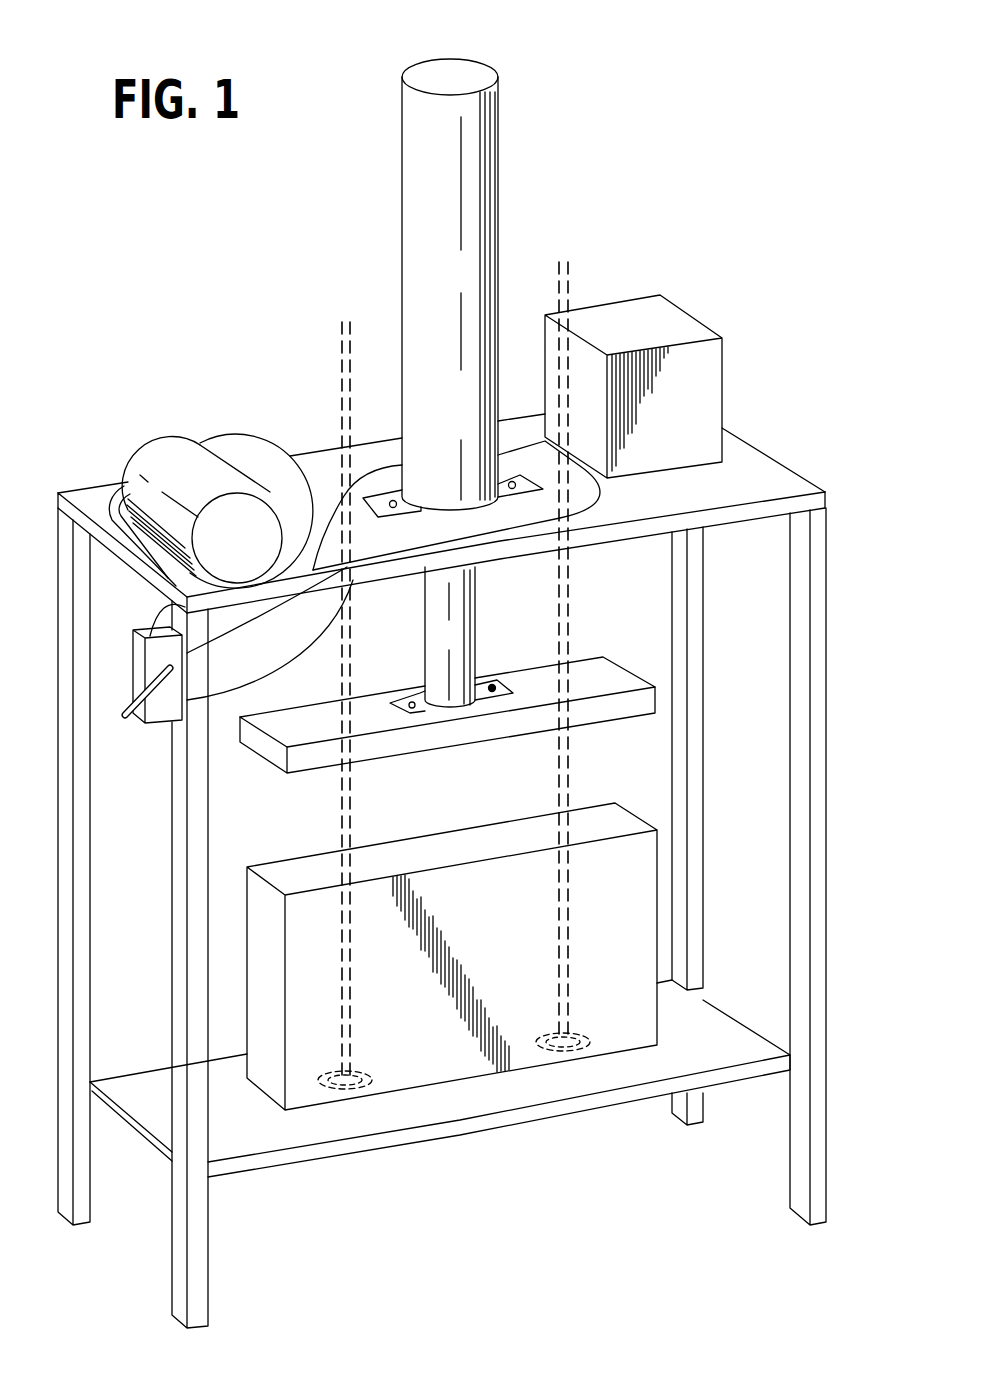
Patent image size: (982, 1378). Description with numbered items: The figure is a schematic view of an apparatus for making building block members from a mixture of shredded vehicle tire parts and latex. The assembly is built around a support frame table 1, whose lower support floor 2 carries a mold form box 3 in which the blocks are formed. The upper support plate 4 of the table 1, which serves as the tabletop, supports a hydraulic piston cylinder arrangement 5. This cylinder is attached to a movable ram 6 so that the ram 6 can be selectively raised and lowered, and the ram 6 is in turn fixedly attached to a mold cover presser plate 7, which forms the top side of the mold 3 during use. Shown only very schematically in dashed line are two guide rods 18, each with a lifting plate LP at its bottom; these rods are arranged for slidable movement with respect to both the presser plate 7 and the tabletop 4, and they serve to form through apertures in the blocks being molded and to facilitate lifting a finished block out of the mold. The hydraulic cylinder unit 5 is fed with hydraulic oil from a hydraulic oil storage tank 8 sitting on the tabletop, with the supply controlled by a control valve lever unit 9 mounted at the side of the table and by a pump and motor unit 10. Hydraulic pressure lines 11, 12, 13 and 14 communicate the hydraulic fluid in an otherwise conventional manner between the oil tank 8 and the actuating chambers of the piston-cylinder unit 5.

The support frame table 1 is at (800, 418).
The lower support floor 2 is at (535, 1126).
The mold form box 3 is at (472, 975).
The upper support plate 4 is at (748, 444).
The hydraulic piston cylinder arrangement 5 is at (494, 172).
The movable ram 6 is at (474, 613).
The mold cover presser plate 7 is at (567, 663).
The hydraulic oil storage tank 8 is at (712, 355).
The control valve lever unit 9 is at (150, 720).
The pump and motor unit 10 is at (190, 450).
The hydraulic pressure line 11 is at (325, 627).
The hydraulic pressure line 12 is at (330, 531).
The hydraulic pressure line 13 is at (272, 442).
The hydraulic pressure line 14 is at (123, 484).
The guide rods 18 is at (341, 338).
The lifting plates LP is at (370, 1068).